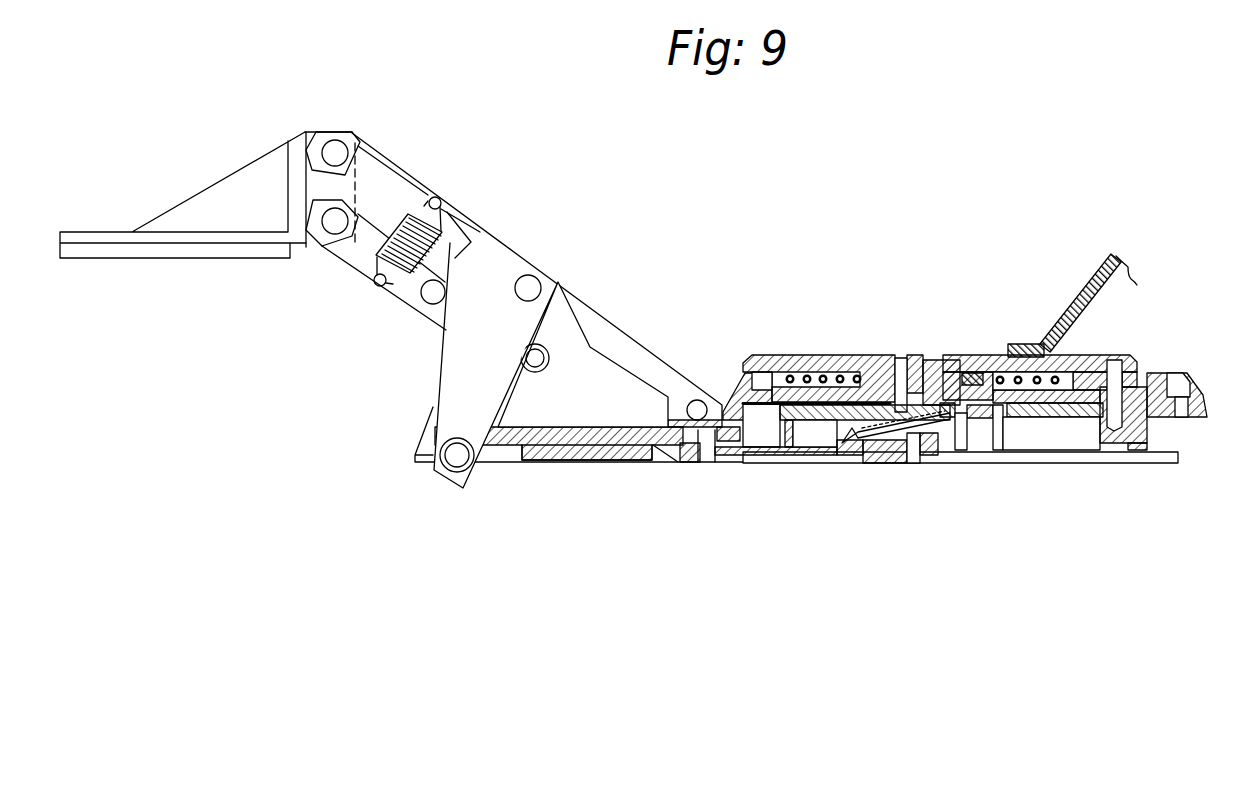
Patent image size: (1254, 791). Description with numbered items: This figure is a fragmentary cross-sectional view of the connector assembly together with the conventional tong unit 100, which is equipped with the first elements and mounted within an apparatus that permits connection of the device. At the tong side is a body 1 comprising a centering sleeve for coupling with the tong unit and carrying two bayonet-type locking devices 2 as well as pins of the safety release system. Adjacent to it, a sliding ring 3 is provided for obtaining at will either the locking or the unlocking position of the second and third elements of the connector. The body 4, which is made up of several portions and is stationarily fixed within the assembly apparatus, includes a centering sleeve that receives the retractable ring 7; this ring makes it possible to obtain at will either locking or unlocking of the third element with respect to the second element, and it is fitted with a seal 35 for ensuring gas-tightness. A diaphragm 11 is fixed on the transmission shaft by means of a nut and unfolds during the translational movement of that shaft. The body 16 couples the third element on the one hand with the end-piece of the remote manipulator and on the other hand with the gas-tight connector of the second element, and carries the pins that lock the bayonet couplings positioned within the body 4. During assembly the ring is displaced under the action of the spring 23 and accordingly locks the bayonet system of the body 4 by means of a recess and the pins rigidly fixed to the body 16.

The tong unit 100 is at (528, 232).
The body 1 is at (731, 397).
The sliding ring 3 is at (785, 355).
The spring 23 is at (837, 357).
The diaphragm 11 is at (884, 357).
The bayonet-type locking device 2 is at (934, 378).
The body 4 is at (957, 368).
The retractable ring 7 is at (990, 368).
The seal 35 is at (984, 385).
The body 16 is at (1197, 400).